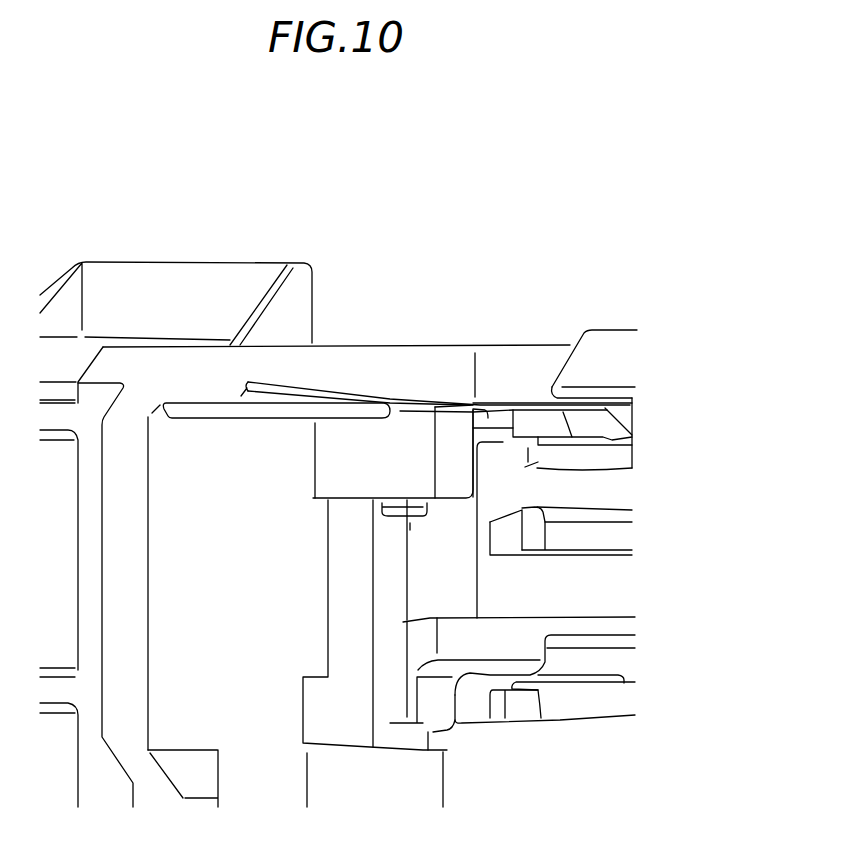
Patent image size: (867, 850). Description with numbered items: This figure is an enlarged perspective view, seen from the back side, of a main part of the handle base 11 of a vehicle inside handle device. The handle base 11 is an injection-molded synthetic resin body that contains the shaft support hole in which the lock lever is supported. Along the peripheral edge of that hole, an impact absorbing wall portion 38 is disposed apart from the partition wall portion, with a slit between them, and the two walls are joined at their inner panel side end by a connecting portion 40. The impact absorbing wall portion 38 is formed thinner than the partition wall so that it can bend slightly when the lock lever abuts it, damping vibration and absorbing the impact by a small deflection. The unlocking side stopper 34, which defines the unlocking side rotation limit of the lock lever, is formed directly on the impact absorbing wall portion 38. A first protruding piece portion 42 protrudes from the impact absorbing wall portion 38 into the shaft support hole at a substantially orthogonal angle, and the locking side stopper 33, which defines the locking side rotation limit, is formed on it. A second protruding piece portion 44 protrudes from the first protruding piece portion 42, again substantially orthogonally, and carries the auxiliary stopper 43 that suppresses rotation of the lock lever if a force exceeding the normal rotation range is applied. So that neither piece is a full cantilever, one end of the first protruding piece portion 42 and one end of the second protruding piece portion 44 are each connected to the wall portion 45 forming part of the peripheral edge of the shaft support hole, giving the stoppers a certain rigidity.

The handle base 11 is at (564, 296).
The connecting portion 40 is at (123, 627).
The wall portion 45 is at (297, 418).
The locking side stopper 33 is at (393, 417).
The first protruding piece portion 42 is at (373, 418).
The auxiliary stopper 43 is at (464, 401).
The second protruding piece portion 44 is at (457, 427).
The unlocking side stopper 34 is at (375, 653).
The impact absorbing wall portion 38 is at (320, 633).